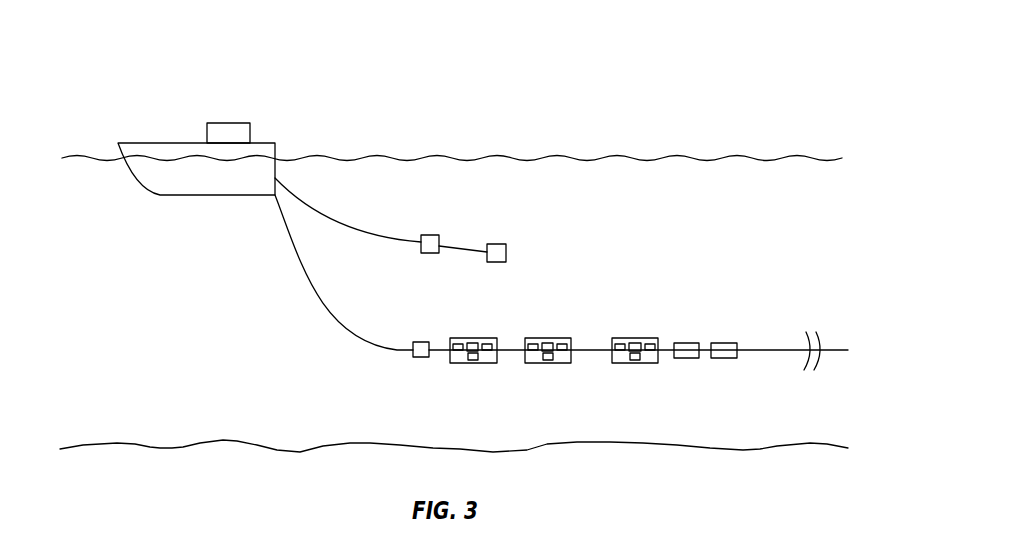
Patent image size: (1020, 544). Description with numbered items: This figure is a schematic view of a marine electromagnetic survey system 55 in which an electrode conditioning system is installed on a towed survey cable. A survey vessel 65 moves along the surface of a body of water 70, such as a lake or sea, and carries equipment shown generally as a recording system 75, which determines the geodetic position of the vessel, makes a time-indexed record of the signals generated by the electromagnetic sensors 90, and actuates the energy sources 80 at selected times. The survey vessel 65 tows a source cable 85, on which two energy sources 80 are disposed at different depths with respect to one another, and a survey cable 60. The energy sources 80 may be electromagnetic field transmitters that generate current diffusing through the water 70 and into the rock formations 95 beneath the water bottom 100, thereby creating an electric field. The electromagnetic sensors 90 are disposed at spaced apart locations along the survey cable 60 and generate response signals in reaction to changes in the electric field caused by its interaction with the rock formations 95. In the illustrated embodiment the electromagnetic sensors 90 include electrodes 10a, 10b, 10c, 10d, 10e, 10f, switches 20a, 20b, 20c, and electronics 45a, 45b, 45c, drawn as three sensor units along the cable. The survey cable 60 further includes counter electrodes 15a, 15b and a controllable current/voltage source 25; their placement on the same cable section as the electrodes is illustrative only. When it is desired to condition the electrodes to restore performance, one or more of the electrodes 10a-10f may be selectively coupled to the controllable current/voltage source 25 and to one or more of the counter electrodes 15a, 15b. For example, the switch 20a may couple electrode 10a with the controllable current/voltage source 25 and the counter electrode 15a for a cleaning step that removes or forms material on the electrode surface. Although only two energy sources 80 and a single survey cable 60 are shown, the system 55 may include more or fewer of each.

The marine electromagnetic survey system 55 is at (551, 69).
The survey vessel 65 is at (160, 143).
The recording system 75 is at (250, 135).
The body of water 70 is at (552, 203).
The energy sources 80 is at (432, 235).
The source cable 85 is at (466, 245).
The survey cable 60 is at (780, 348).
The counter electrode 15a is at (420, 358).
The counter electrode 15b is at (725, 343).
The controllable current/voltage source 25 is at (686, 343).
The switch 20a is at (472, 364).
The switch 20b is at (547, 365).
The switch 20c is at (635, 365).
The electrode 10a is at (458, 344).
The electrode 10b is at (487, 344).
The electrode 10c is at (533, 344).
The electrode 10d is at (561, 344).
The electrode 10e is at (620, 344).
The electrode 10f is at (650, 344).
The electronics 45a is at (472, 343).
The electronics 45b is at (549, 343).
The electronics 45c is at (635, 343).
The electromagnetic sensors 90 is at (479, 364).
The water bottom 100 is at (232, 440).
The rock formations 95 is at (352, 473).